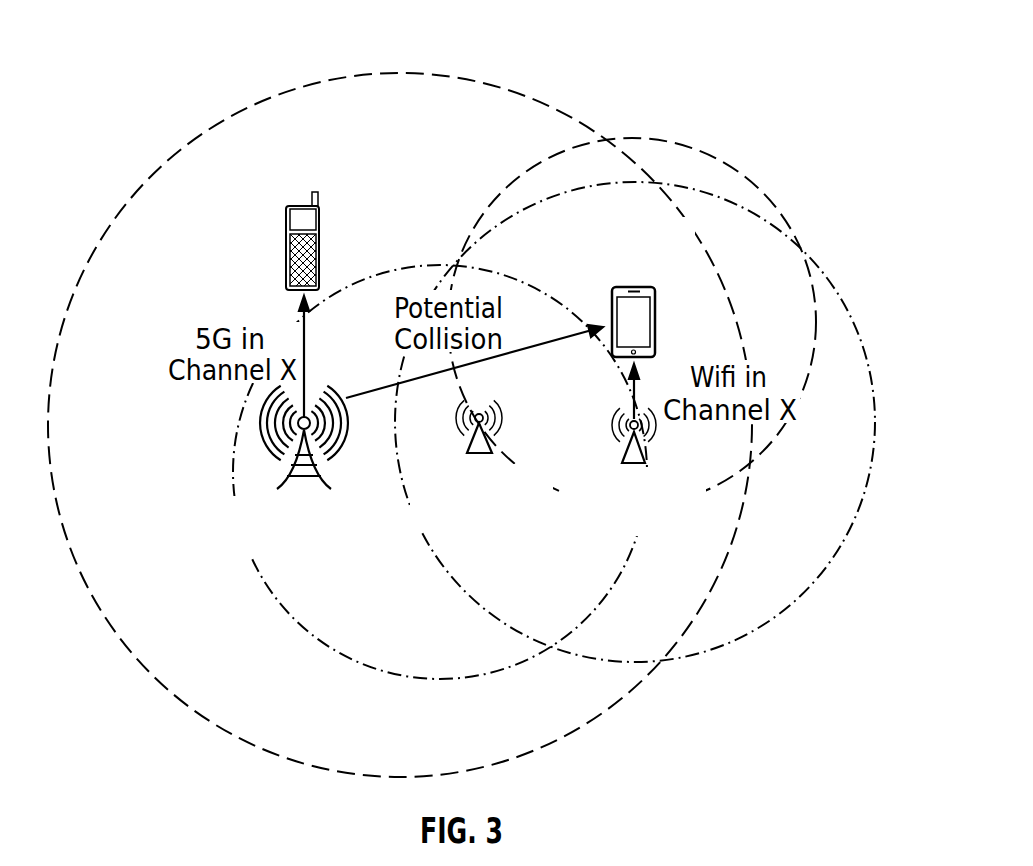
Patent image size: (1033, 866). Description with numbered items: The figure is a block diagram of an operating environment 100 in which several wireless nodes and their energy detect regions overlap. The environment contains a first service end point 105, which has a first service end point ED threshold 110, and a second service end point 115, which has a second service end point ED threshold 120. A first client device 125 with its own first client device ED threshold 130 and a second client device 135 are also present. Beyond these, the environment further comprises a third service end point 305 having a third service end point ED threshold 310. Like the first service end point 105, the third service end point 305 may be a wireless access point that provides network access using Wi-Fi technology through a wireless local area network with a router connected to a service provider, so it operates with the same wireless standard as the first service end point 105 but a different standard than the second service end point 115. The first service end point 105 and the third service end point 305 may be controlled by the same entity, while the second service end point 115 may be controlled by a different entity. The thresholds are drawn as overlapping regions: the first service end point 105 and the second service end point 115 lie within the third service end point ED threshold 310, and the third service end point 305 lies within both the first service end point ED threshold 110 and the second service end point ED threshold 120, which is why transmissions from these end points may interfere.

The operating environment 100 is at (130, 26).
The first service end point 105 is at (645, 450).
The first service end point ED threshold 110 is at (687, 660).
The second service end point 115 is at (283, 481).
The second service end point ED threshold 120 is at (401, 72).
The first client device 125 is at (655, 328).
The first client device ED threshold 130 is at (653, 140).
The second client device 135 is at (286, 223).
The third service end point 305 is at (488, 443).
The third service end point ED threshold 310 is at (429, 265).